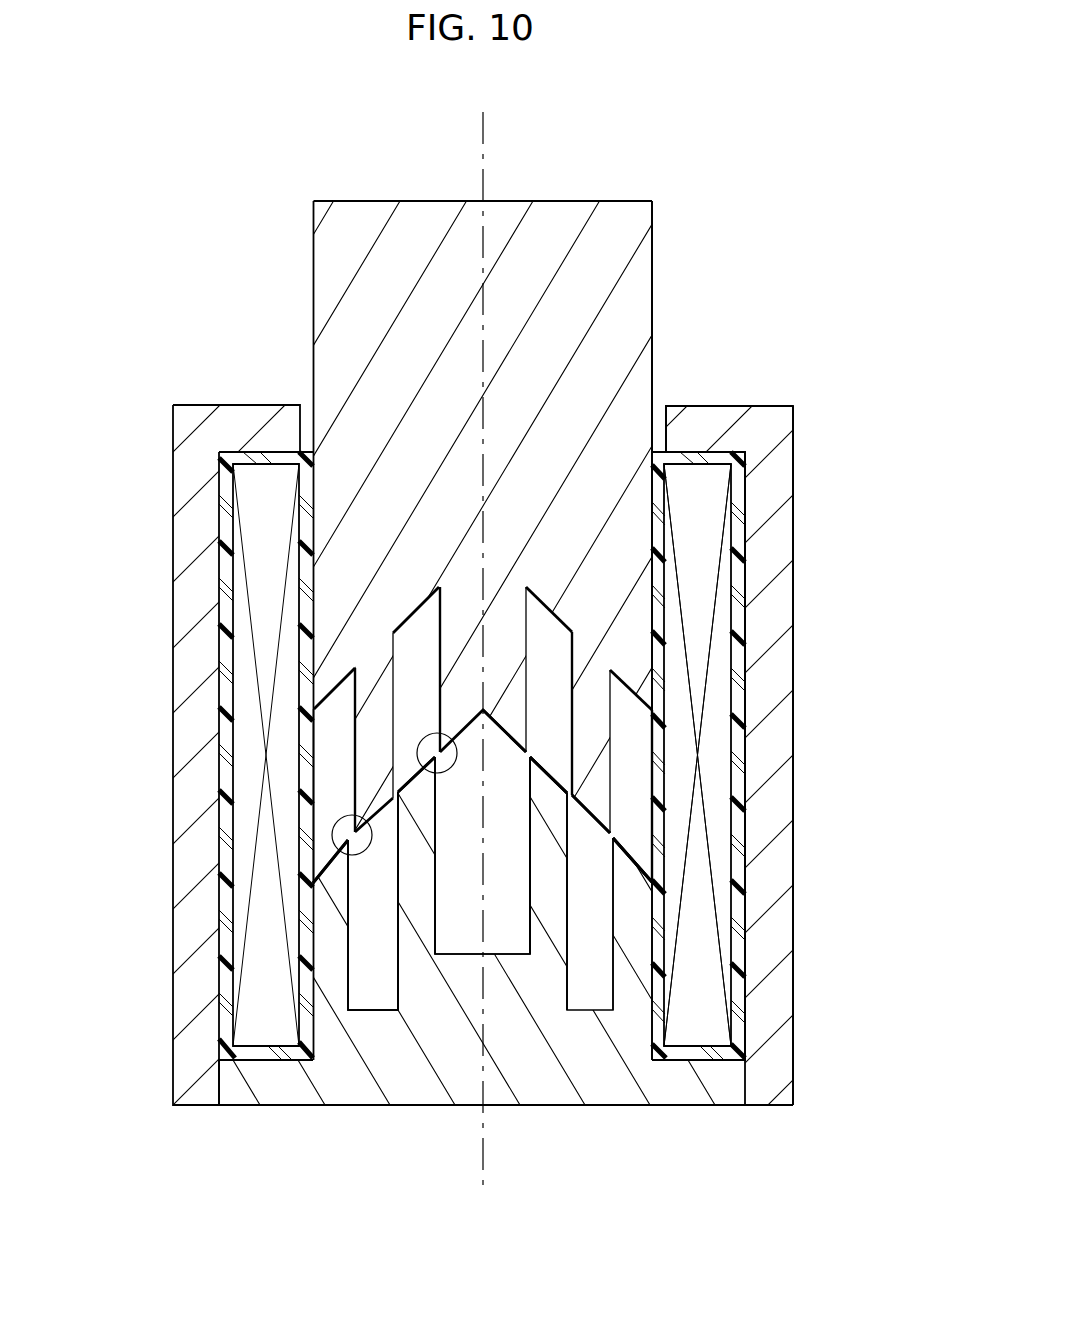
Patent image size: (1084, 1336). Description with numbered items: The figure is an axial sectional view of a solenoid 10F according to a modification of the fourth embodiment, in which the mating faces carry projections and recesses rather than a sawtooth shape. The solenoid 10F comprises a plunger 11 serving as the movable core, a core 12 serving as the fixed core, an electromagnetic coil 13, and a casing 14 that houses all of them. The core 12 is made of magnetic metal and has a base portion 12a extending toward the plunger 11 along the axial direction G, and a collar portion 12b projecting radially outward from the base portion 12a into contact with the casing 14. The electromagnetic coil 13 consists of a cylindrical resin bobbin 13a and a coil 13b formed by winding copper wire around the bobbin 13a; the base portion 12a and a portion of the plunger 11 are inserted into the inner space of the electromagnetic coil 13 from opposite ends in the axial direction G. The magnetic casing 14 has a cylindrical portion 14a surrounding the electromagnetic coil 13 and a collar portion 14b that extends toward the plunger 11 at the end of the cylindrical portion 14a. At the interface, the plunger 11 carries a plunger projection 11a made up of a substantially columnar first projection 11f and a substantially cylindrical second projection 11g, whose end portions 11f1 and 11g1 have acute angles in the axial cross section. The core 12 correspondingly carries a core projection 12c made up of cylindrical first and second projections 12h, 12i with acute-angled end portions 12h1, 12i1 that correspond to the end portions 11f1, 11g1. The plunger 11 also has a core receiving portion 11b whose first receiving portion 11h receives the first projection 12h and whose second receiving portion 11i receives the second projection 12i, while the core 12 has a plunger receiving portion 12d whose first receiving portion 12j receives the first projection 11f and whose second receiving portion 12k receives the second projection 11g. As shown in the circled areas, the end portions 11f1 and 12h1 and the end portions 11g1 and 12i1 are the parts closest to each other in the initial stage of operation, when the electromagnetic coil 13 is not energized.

The solenoid 10F is at (725, 111).
The axial direction G is at (485, 160).
The plunger 11 is at (666, 303).
The plunger projection 11a is at (588, 601).
The core receiving portion 11b is at (318, 764).
The first projection 11f is at (497, 642).
The second projection 11g is at (587, 745).
The end portion 11f1 is at (540, 727).
The end portion 11g1 is at (603, 815).
The first receiving portion 11h is at (418, 633).
The second receiving portion 11i is at (338, 713).
The core 12 is at (635, 1121).
The base portion 12a is at (386, 1010).
The collar portion 12b is at (248, 1068).
The core projection 12c is at (537, 983).
The plunger receiving portion 12d is at (510, 943).
The first projection 12h is at (557, 893).
The second projection 12i is at (635, 922).
The end portion 12h1 is at (540, 760).
The end portion 12i1 is at (617, 855).
The first receiving portion 12j is at (455, 902).
The second receiving portion 12k is at (370, 895).
The electromagnetic coil 13 is at (759, 953).
The bobbin 13a is at (740, 988).
The coil 13b is at (707, 1002).
The casing 14 is at (804, 450).
The cylindrical portion 14a is at (770, 524).
The collar portion 14b is at (706, 425).